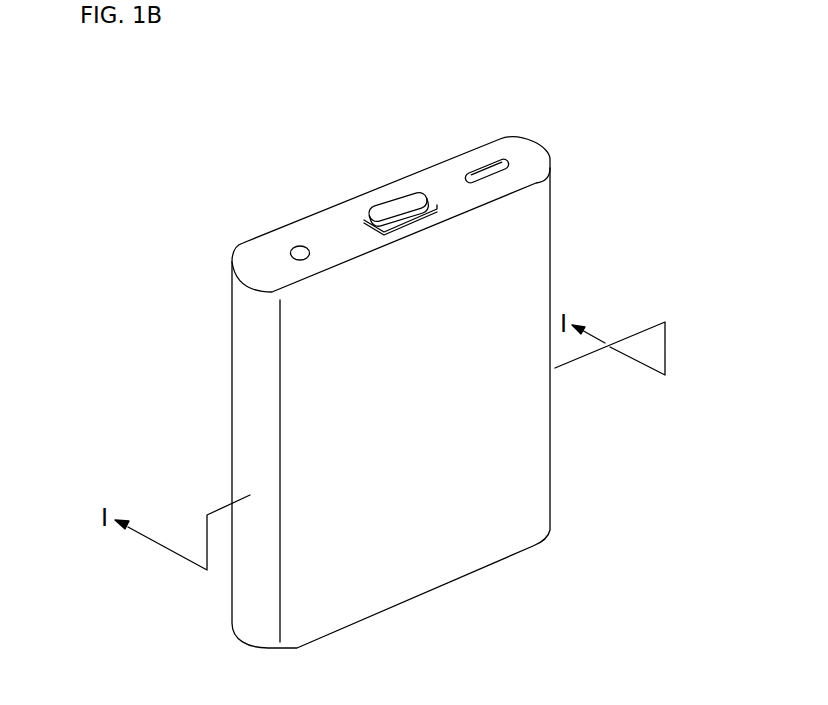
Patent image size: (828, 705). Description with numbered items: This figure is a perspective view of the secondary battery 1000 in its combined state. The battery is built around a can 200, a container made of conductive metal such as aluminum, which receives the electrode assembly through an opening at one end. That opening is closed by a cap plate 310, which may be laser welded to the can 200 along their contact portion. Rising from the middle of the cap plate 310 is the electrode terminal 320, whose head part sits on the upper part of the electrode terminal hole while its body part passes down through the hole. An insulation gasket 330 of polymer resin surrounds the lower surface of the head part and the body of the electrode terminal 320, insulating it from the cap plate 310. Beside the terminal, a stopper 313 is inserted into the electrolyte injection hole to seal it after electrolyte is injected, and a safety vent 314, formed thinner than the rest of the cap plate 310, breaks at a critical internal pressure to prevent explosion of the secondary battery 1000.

The secondary battery 1000 is at (172, 123).
The can 200 is at (540, 235).
The cap plate 310 is at (330, 215).
The stopper 313 is at (297, 252).
The safety vent 314 is at (492, 168).
The electrode terminal 320 is at (383, 208).
The insulation gasket 330 is at (434, 206).